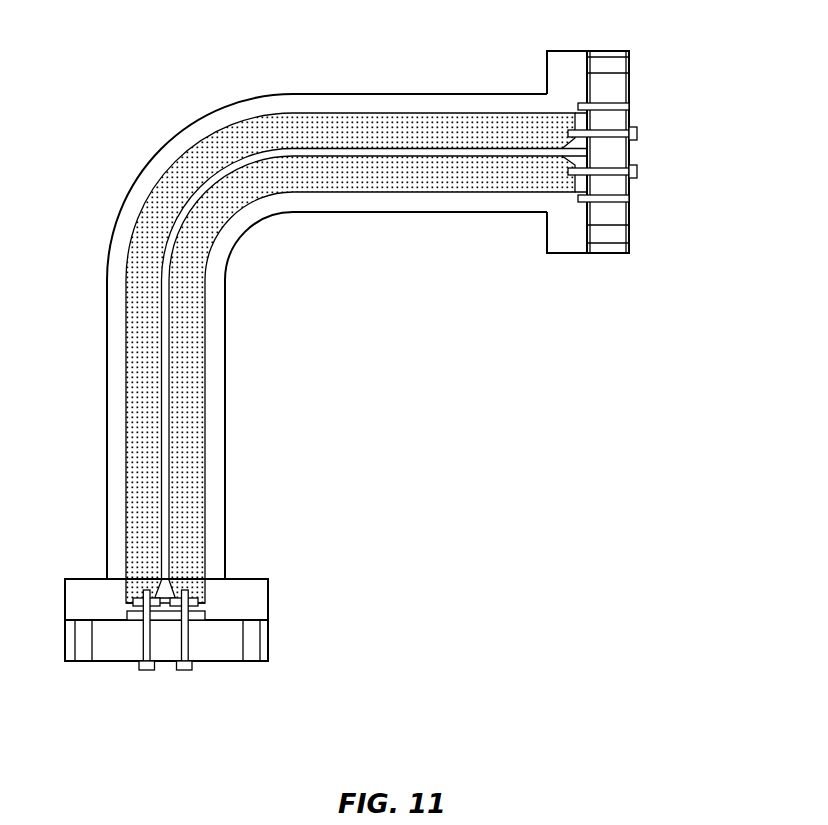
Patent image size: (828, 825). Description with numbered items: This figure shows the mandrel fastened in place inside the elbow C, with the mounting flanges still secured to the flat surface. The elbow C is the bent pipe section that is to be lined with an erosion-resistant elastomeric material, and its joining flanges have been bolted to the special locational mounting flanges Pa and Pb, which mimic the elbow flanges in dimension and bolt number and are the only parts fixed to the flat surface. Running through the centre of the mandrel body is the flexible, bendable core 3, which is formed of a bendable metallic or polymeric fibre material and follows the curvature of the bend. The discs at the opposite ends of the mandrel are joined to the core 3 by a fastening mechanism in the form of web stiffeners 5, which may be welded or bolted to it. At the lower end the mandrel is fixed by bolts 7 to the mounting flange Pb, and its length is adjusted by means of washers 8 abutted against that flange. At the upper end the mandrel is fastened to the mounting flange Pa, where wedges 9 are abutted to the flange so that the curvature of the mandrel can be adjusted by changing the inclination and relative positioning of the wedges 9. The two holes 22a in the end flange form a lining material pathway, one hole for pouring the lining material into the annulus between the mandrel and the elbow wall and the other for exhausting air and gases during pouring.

The elbow C is at (150, 130).
The core 3 is at (170, 445).
The web stiffeners 5 is at (172, 588).
The bolts 7 is at (183, 671).
The washers 8 is at (197, 613).
The wedges 9 is at (560, 118).
The holes 22a is at (630, 104).
The mounting flange Pa is at (610, 262).
The mounting flange Pb is at (280, 641).